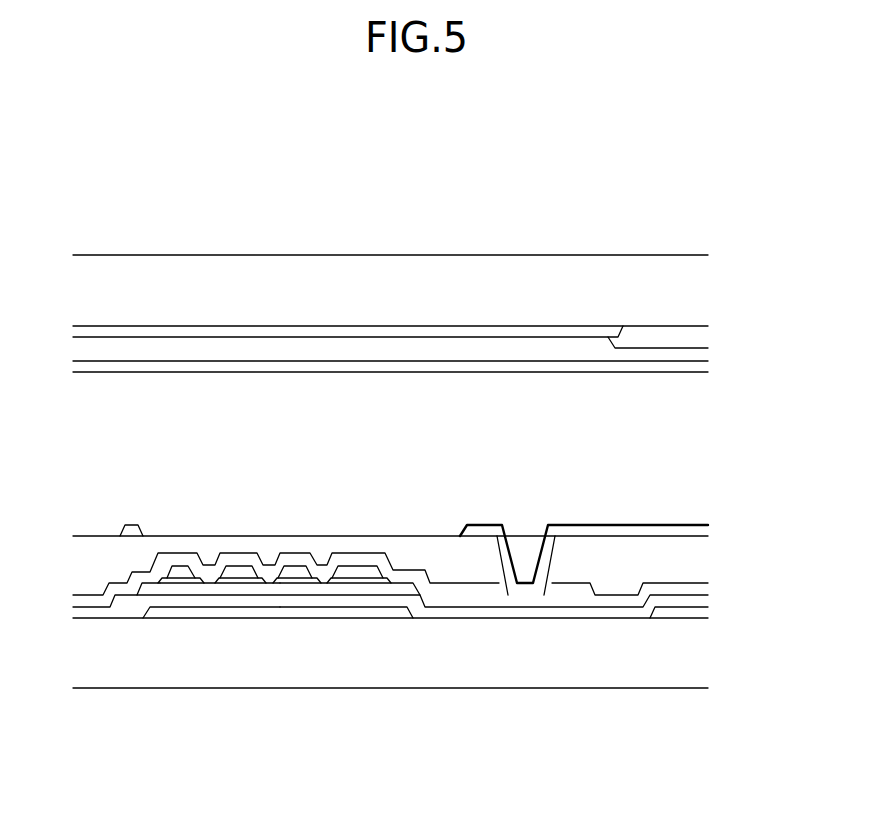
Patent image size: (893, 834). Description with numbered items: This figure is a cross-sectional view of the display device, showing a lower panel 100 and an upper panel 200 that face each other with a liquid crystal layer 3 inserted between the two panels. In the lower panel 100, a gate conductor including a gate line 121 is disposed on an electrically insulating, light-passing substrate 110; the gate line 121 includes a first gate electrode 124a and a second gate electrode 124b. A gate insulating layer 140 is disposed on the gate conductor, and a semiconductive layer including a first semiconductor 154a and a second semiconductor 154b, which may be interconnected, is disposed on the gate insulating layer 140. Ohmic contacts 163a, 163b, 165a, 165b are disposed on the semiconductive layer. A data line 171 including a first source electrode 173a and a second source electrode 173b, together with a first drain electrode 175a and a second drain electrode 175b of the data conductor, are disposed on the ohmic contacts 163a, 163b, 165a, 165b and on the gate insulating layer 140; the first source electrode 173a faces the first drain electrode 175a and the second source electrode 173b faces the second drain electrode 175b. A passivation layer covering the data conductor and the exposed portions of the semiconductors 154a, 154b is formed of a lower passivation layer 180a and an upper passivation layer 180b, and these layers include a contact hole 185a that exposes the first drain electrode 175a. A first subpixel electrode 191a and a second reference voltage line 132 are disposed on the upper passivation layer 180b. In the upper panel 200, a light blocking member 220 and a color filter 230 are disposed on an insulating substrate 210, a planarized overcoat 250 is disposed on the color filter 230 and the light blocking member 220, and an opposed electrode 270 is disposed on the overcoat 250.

The liquid crystal layer 3 is at (715, 372).
The lower panel 100 is at (417, 625).
The substrate 110 is at (597, 668).
The gate line 121 is at (681, 613).
The first gate electrode 124a is at (330, 613).
The second gate electrode 124b is at (215, 613).
The second reference voltage line 132 is at (133, 524).
The gate insulating layer 140 is at (102, 612).
The first semiconductor 154a is at (343, 588).
The second semiconductor 154b is at (191, 590).
The ohmic contact 163a is at (290, 585).
The ohmic contact 163b is at (168, 585).
The ohmic contact 165a is at (355, 580).
The ohmic contact 165b is at (239, 588).
The data line 171 is at (121, 600).
The first source electrode 173a is at (290, 575).
The second source electrode 173b is at (189, 575).
The first drain electrode 175a is at (348, 575).
The second drain electrode 175b is at (238, 575).
The lower passivation layer 180a is at (478, 588).
The upper passivation layer 180b is at (432, 548).
The contact hole 185a is at (505, 557).
The first subpixel electrode 191a is at (571, 527).
The upper panel 200 is at (419, 316).
The insulating substrate 210 is at (311, 276).
The light blocking member 220 is at (548, 332).
The color filter 230 is at (660, 334).
The overcoat 250 is at (437, 350).
The opposed electrode 270 is at (444, 375).